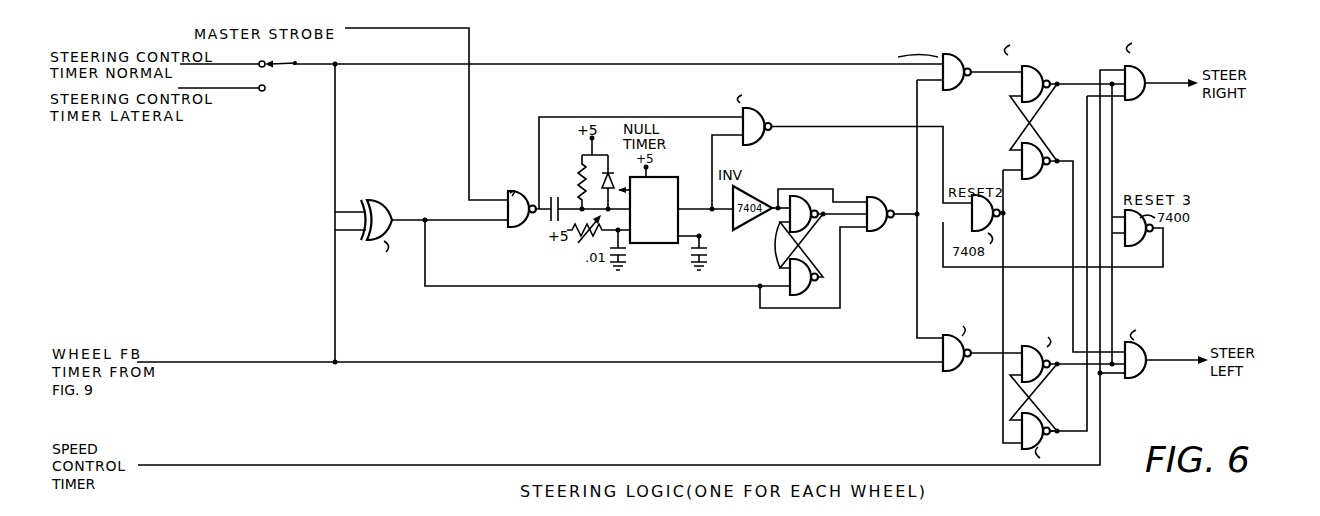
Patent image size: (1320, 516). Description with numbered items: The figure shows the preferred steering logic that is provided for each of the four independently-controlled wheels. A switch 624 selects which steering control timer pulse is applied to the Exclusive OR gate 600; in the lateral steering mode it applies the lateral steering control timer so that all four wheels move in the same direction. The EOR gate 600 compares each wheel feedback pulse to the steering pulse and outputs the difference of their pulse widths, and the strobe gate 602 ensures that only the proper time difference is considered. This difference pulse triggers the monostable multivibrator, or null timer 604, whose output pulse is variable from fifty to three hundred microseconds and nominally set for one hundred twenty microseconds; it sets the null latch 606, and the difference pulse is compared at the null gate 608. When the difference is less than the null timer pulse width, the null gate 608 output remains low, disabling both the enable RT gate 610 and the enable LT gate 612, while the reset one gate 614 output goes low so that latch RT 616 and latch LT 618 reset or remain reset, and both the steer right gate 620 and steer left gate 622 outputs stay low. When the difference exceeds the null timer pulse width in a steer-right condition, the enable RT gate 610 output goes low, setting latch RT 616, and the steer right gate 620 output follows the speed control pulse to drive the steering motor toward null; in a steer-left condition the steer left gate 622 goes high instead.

The Exclusive OR gate 600 is at (393, 203).
The strobe gate 602 is at (522, 228).
The monostable multivibrator 604 is at (645, 243).
The null latch 606 is at (806, 199).
The null gate 608 is at (870, 230).
The enable RT gate 610 is at (947, 90).
The enable LT gate 612 is at (950, 373).
The Reset 1 gate 614 is at (766, 113).
The latch RT 616 is at (1040, 66).
The latch LT 618 is at (1018, 365).
The steer right gate 620 is at (1130, 100).
The steer left gate 622 is at (1132, 378).
The switch S1 624 is at (298, 58).